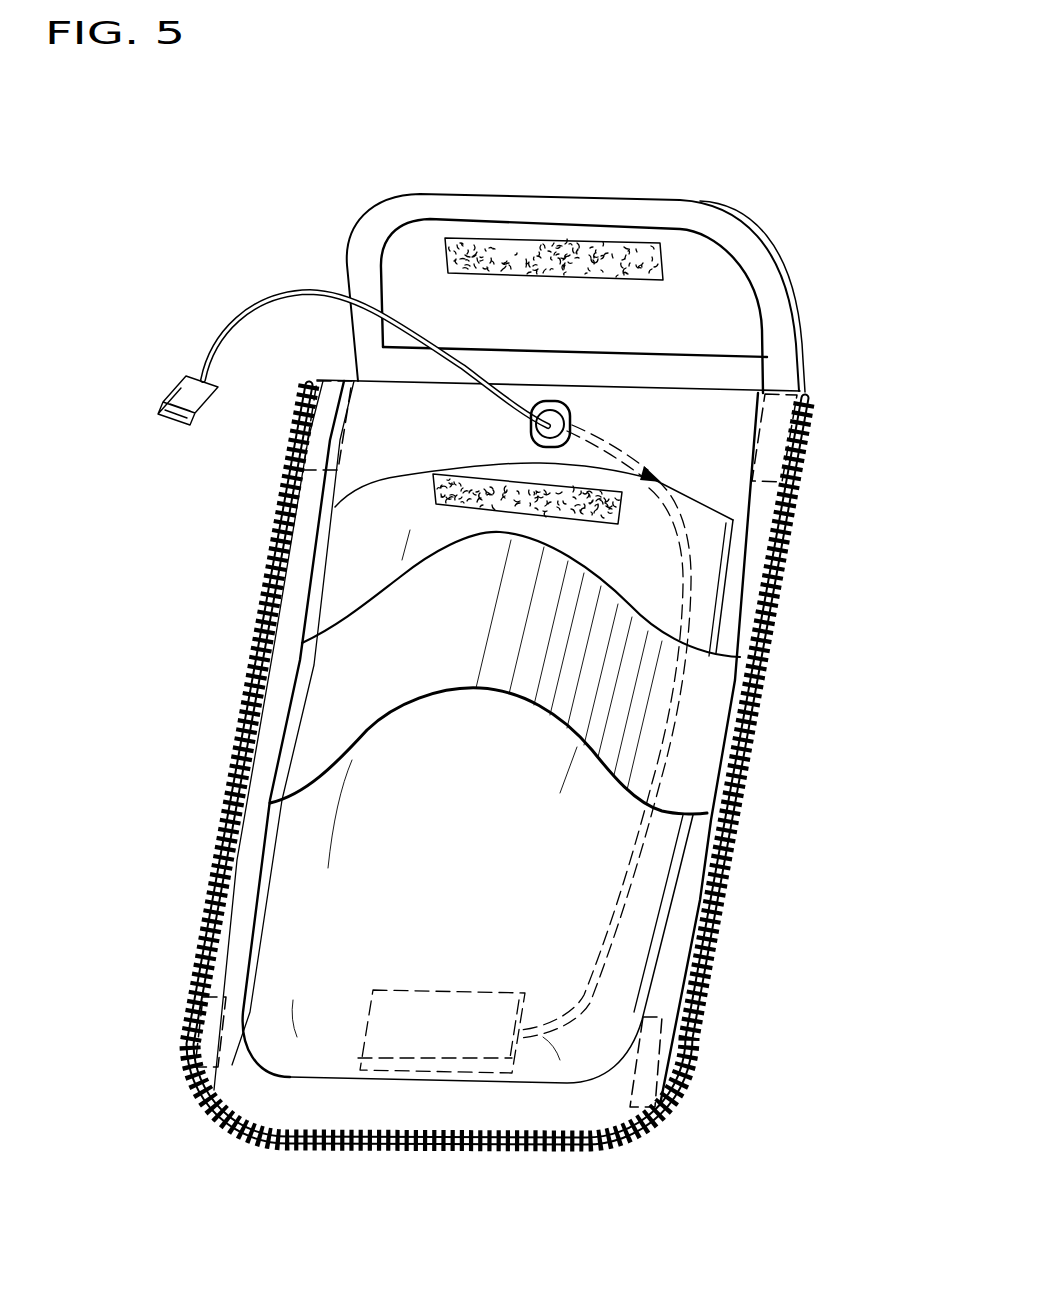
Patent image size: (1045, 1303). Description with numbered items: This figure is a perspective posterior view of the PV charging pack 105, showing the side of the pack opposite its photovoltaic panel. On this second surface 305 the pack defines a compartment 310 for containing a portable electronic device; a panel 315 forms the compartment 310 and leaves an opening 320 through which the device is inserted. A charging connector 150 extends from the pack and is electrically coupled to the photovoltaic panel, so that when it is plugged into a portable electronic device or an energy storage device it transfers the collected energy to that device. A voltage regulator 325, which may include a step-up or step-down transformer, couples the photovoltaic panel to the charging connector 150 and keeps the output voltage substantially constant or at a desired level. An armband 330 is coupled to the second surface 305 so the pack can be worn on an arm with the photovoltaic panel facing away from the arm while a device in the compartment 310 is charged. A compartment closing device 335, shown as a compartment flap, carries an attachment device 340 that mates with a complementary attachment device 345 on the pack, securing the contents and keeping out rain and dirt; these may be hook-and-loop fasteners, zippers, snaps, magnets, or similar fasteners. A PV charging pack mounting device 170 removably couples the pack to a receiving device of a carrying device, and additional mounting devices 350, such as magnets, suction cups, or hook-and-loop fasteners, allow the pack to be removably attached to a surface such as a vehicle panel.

The PV charging pack 105 is at (182, 1160).
The charging connector 150 is at (260, 300).
The PV charging pack mounting device 170 is at (214, 889).
The second surface 305 is at (760, 392).
The compartment 310 is at (452, 835).
The panel 315 is at (718, 533).
The opening 320 is at (660, 479).
The voltage regulator 325 is at (480, 1065).
The armband 330 is at (528, 703).
The compartment closing device 335 is at (396, 197).
The attachment device 340 is at (603, 242).
The complementary attachment device 345 is at (465, 493).
The additional mounting device 350 is at (337, 378).